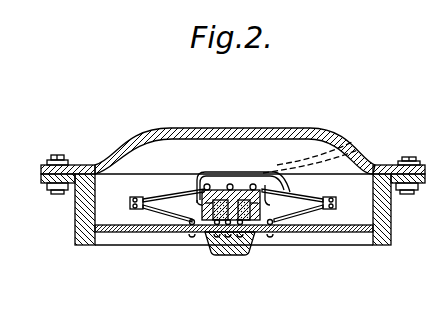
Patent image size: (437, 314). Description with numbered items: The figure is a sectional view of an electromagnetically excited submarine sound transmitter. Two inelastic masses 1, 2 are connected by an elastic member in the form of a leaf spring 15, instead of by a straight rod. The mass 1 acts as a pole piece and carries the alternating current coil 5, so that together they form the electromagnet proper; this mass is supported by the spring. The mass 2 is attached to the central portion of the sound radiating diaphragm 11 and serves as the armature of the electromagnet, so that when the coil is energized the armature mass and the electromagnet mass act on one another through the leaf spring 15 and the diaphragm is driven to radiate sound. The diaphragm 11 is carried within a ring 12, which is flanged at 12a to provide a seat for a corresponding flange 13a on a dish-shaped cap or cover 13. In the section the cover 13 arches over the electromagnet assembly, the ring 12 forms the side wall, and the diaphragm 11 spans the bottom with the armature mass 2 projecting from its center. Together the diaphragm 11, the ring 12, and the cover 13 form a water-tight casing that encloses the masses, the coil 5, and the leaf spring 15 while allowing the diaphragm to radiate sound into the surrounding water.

The mass 1 is at (241, 190).
The mass 2 is at (222, 253).
The alternating current coil 5 is at (262, 211).
The sound radiating diaphragm 11 is at (338, 232).
The ring 12 is at (80, 215).
The flange 12a is at (68, 186).
The dish-shaped cap or cover 13 is at (242, 128).
The flange 13a is at (392, 165).
The leaf spring 15 is at (153, 201).